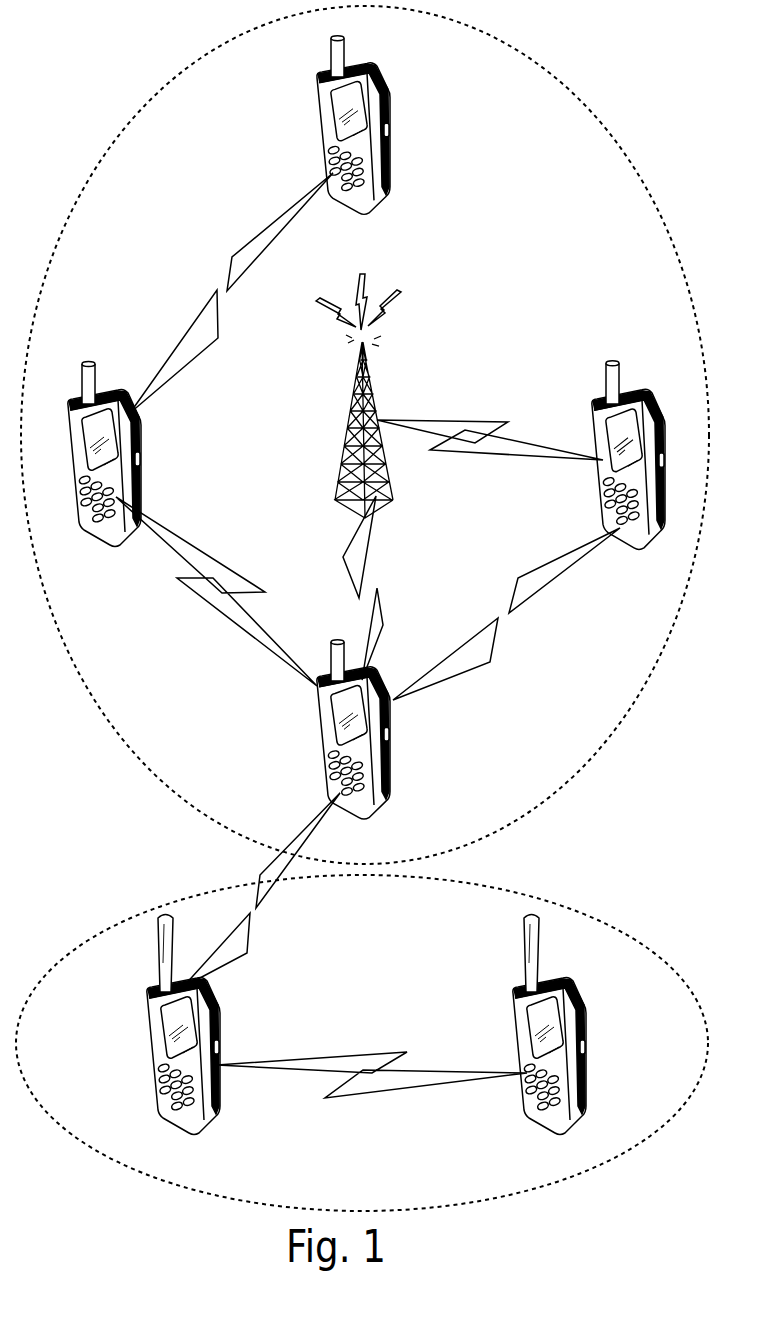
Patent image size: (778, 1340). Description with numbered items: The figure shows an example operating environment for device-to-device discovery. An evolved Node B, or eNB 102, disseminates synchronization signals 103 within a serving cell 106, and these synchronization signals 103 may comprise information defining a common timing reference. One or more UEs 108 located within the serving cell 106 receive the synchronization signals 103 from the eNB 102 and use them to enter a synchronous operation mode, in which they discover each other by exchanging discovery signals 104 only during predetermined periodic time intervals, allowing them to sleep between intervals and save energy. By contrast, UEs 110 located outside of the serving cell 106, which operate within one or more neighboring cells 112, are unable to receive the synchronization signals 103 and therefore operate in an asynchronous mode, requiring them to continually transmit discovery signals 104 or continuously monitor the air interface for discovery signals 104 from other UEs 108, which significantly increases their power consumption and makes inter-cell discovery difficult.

The evolved Node B (eNB) 102 is at (405, 373).
The synchronization signals 103 is at (520, 445).
The discovery signals 104 is at (212, 285).
The serving cell 106 is at (141, 109).
The UEs 108 is at (338, 252).
The UEs 110 is at (144, 1163).
The neighboring cells 112 is at (110, 928).